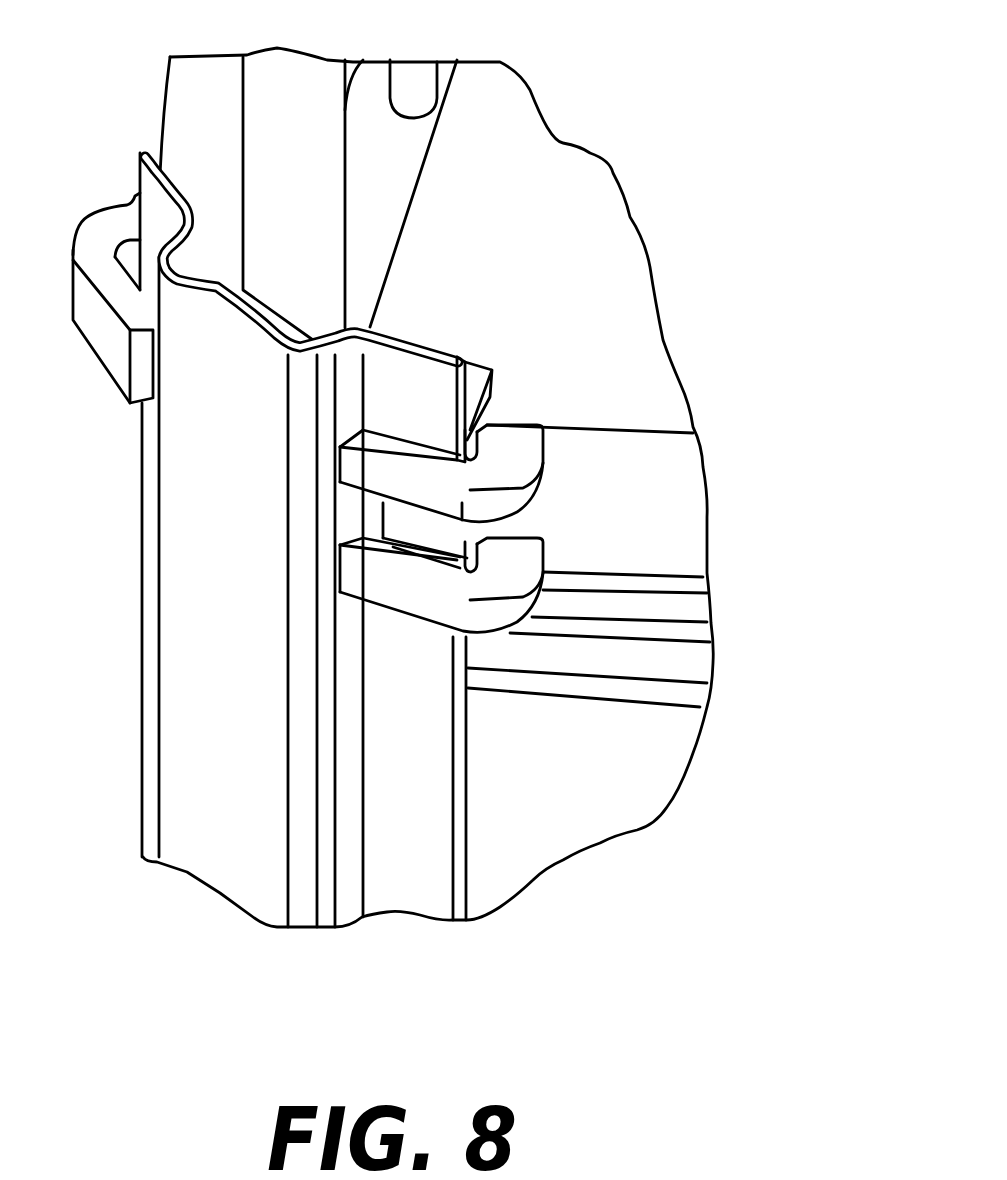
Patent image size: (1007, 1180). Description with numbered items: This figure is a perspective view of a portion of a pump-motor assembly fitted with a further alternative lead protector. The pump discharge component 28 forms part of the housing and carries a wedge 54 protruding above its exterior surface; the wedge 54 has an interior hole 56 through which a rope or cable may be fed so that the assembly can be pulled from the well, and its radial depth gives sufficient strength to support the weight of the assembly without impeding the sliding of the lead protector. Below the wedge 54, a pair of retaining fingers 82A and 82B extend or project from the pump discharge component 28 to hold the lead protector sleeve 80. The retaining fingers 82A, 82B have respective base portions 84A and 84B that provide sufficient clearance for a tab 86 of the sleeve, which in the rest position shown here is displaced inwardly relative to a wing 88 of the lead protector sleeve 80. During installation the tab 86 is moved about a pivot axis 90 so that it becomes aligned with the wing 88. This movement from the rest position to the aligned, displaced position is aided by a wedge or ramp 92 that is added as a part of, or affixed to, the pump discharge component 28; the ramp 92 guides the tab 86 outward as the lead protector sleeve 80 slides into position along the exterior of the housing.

The pump discharge component 28 is at (451, 486).
The wedge 54 is at (377, 163).
The interior hole 56 is at (417, 87).
The lead protector sleeve 80 is at (193, 625).
The retaining finger 82A is at (527, 602).
The retaining finger 82B is at (530, 486).
The base portion 84A is at (493, 543).
The base portion 84B is at (502, 432).
The tab 86 is at (417, 523).
The wing 88 is at (417, 847).
The pivot axis 90 is at (377, 517).
The wedge or ramp 92 is at (490, 397).